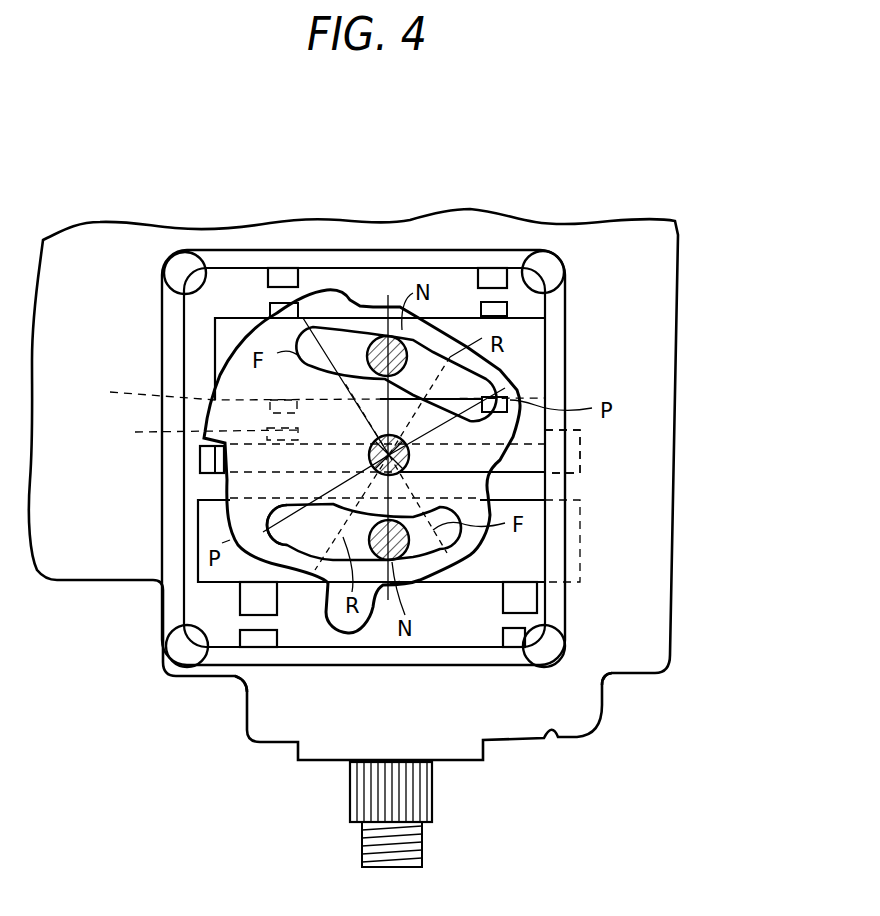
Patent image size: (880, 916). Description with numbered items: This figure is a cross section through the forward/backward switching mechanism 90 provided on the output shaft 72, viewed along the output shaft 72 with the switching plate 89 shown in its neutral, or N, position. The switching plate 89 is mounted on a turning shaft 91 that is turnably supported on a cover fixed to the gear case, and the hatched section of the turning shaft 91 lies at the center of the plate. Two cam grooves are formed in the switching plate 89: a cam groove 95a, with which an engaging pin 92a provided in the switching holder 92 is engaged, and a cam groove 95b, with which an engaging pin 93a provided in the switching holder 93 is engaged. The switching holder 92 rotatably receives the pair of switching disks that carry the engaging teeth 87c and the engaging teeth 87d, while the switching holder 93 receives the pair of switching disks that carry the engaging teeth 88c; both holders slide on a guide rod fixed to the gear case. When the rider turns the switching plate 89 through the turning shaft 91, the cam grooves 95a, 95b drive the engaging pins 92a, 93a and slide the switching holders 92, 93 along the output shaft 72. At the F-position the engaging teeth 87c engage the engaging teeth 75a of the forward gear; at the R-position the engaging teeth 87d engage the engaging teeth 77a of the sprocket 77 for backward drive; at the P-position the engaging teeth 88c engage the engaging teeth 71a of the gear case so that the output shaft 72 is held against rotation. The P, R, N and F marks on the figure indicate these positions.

The engaging teeth 71a is at (238, 677).
The output shaft 72 is at (412, 806).
The engaging teeth 75a is at (278, 277).
The sprocket 77 is at (199, 461).
The engaging teeth 77a is at (267, 432).
The engaging teeth 87c is at (507, 307).
The engaging teeth 87d is at (215, 400).
The engaging teeth 88c is at (250, 599).
The switching plate 89 is at (488, 453).
The forward/backward switching mechanism 90 is at (410, 268).
The turning shaft 91 is at (407, 465).
The switching holder 92 is at (533, 337).
The engaging pin 92a is at (372, 336).
The switching holder 93 is at (533, 558).
The engaging pin 93a is at (402, 476).
The cam groove 95a is at (340, 290).
The cam groove 95b is at (312, 537).